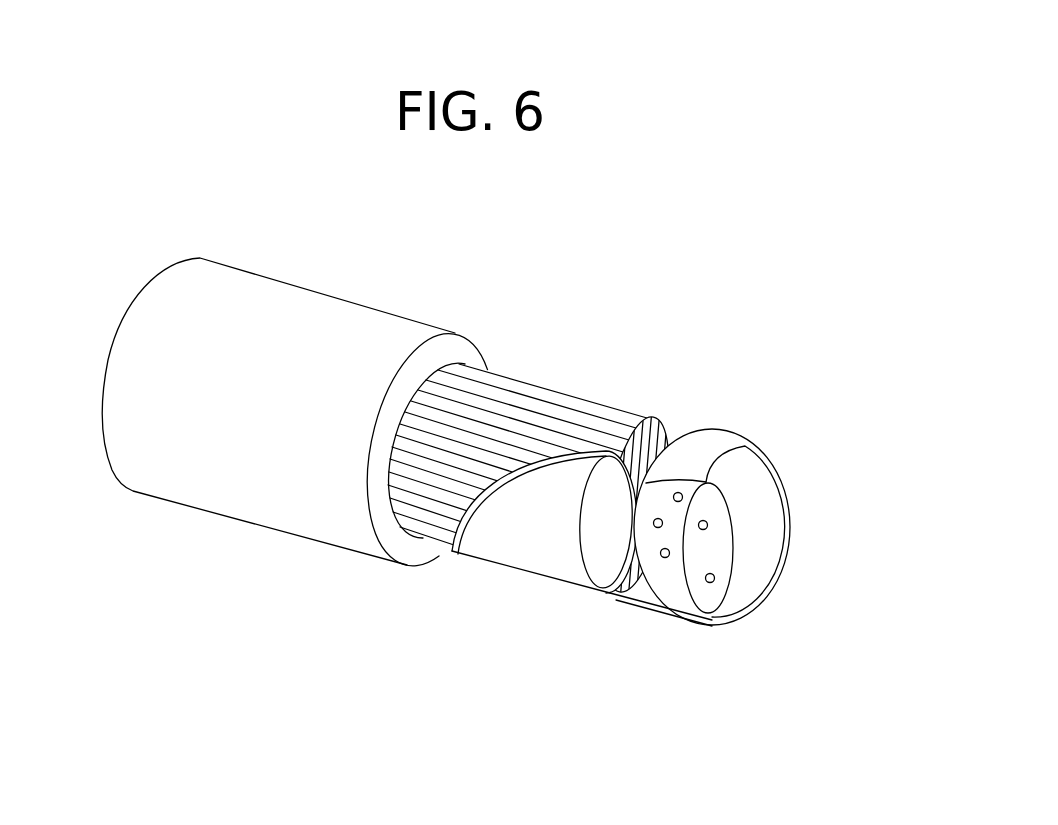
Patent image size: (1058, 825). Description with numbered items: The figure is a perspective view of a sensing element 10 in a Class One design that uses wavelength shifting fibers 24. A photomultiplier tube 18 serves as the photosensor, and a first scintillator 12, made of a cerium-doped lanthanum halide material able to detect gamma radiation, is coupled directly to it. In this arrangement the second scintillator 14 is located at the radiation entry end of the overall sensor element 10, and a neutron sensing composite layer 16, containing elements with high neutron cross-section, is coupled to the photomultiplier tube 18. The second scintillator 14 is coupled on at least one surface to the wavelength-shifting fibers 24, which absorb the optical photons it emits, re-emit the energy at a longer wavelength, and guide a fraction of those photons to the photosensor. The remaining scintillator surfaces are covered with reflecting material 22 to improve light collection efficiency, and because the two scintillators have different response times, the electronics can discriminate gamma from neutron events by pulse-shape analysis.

The sensing element 10 is at (655, 210).
The first scintillator 12 is at (503, 527).
The second scintillator 14 is at (667, 561).
The neutron sensing composite layer 16 is at (643, 595).
The photomultiplier tube 18 is at (348, 327).
The reflecting material 22 is at (760, 507).
The wavelength-shifting fibers 24 is at (640, 432).